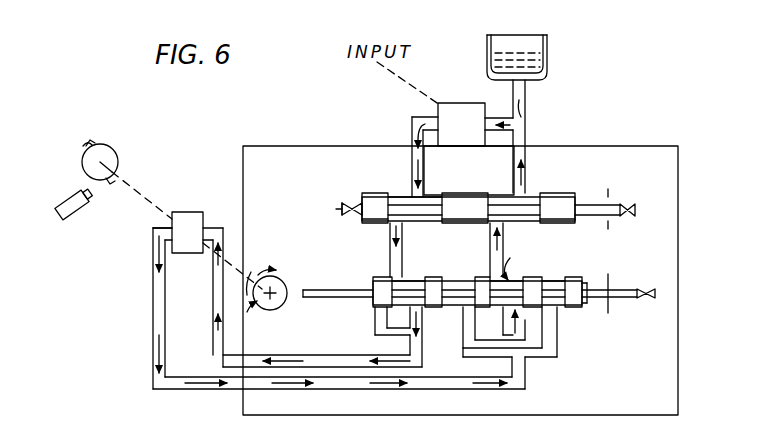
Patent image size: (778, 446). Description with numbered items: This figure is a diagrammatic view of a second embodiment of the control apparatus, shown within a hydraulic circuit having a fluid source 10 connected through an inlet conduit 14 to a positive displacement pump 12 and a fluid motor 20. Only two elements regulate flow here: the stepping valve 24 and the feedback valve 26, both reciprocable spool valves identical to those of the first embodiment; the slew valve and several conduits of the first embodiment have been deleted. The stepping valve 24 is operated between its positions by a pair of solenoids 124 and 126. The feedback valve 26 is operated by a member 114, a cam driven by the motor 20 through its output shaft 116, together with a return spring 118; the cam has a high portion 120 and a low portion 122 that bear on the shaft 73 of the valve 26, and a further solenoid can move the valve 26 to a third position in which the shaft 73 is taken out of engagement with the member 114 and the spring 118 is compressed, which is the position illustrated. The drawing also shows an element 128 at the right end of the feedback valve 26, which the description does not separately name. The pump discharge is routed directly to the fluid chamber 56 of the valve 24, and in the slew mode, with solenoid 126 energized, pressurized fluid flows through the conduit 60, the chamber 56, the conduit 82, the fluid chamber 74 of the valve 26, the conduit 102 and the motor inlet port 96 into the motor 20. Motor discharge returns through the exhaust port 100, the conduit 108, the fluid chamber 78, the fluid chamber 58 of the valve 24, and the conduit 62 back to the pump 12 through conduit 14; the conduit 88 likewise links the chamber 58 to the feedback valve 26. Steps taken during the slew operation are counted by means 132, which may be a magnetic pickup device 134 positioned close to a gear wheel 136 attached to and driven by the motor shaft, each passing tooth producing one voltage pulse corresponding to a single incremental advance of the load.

The fluid source 10 is at (548, 60).
The positive displacement pump 12 is at (476, 103).
The inlet conduit 14 is at (513, 104).
The fluid motor 20 is at (201, 193).
The stepping valve 24 is at (590, 192).
The feedback valve 26 is at (597, 305).
The fluid chamber 56 is at (408, 202).
The fluid chamber 58 is at (500, 197).
The conduit 60 is at (413, 153).
The conduit 62 is at (527, 135).
The shaft 73 is at (350, 290).
The fluid chamber 74 is at (397, 282).
The fluid chamber 78 is at (516, 281).
The conduit 82 is at (390, 237).
The conduit 88 is at (503, 239).
The inlet port 96 is at (208, 230).
The exhaust port 100 is at (170, 228).
The conduit 102 is at (372, 355).
The conduit 108 is at (449, 389).
The member 114 is at (249, 312).
The output shaft 116 is at (229, 262).
The return spring 118 is at (584, 284).
The high portion 120 is at (277, 310).
The low portion 122 is at (283, 279).
The solenoid 124 is at (348, 205).
The solenoid 126 is at (626, 216).
The restriction 128 is at (641, 289).
The means for counting steps 132 is at (118, 160).
The magnetic pickup device 134 is at (83, 146).
The gear wheel 136 is at (74, 213).